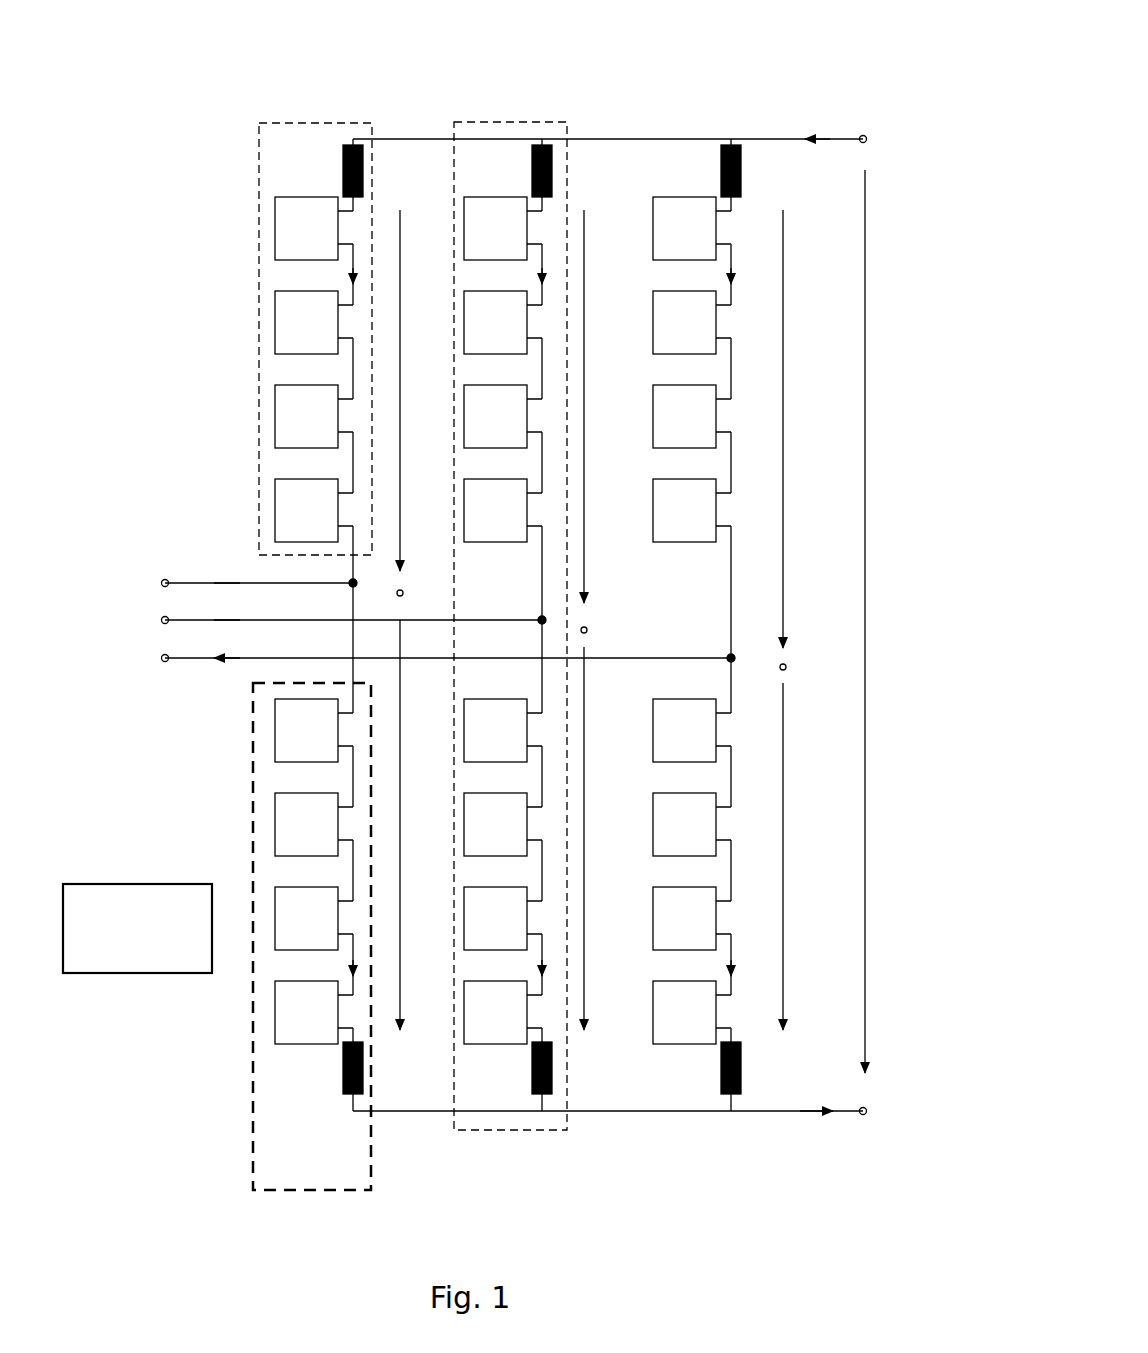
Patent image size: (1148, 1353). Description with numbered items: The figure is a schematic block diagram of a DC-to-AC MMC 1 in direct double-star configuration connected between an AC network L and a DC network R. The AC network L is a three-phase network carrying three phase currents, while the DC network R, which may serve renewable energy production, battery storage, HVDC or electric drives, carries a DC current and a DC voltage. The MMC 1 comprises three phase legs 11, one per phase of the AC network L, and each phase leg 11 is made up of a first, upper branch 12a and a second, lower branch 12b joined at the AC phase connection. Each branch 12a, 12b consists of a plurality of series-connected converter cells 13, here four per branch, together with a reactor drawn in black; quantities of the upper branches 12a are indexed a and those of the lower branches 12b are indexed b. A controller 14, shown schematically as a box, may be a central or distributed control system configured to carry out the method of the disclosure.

The DC-to-AC MMC 1 is at (855, 64).
The phase leg 11 is at (499, 60).
The first (upper) branch 12a is at (288, 82).
The second (lower) branch 12b is at (286, 1145).
The converter cell 13 is at (289, 243).
The controller 14 is at (121, 926).
The AC network L is at (100, 545).
The DC network R is at (929, 254).